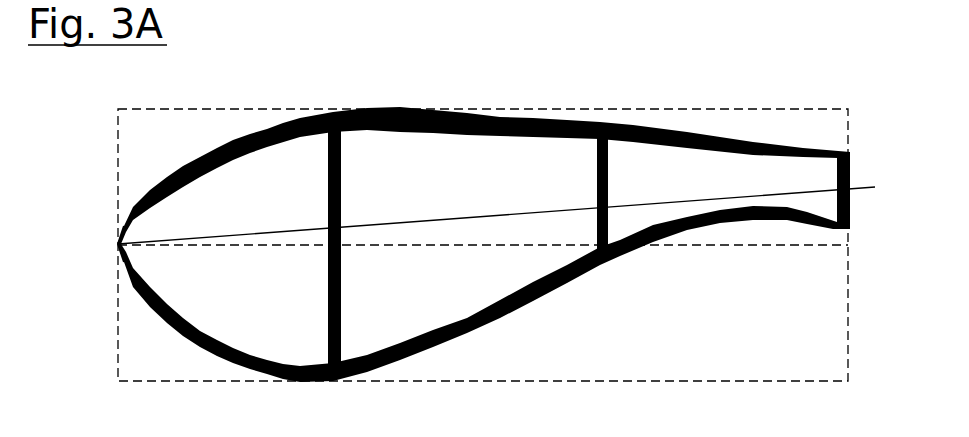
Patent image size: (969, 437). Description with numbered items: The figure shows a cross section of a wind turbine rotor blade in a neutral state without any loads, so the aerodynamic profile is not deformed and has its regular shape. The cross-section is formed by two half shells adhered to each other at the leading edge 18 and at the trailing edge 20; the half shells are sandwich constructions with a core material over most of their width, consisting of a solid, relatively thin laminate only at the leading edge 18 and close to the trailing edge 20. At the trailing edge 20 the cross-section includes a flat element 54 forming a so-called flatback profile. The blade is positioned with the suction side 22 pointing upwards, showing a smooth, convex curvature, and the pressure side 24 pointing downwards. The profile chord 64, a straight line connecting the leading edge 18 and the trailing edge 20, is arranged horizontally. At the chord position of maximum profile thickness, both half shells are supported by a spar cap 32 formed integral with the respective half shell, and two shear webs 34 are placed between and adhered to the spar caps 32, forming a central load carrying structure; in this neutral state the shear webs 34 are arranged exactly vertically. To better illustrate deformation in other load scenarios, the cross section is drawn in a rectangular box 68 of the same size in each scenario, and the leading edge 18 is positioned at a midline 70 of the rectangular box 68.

The leading edge 18 is at (105, 245).
The trailing edge 20 is at (850, 187).
The suction side 22 is at (547, 117).
The pressure side 24 is at (550, 292).
The spar cap 32 is at (484, 231).
The shear web 34 is at (342, 193).
The flat element 54 is at (850, 212).
The profile chord 64 is at (283, 228).
The rectangular box 68 is at (118, 345).
The midline 70 is at (463, 247).